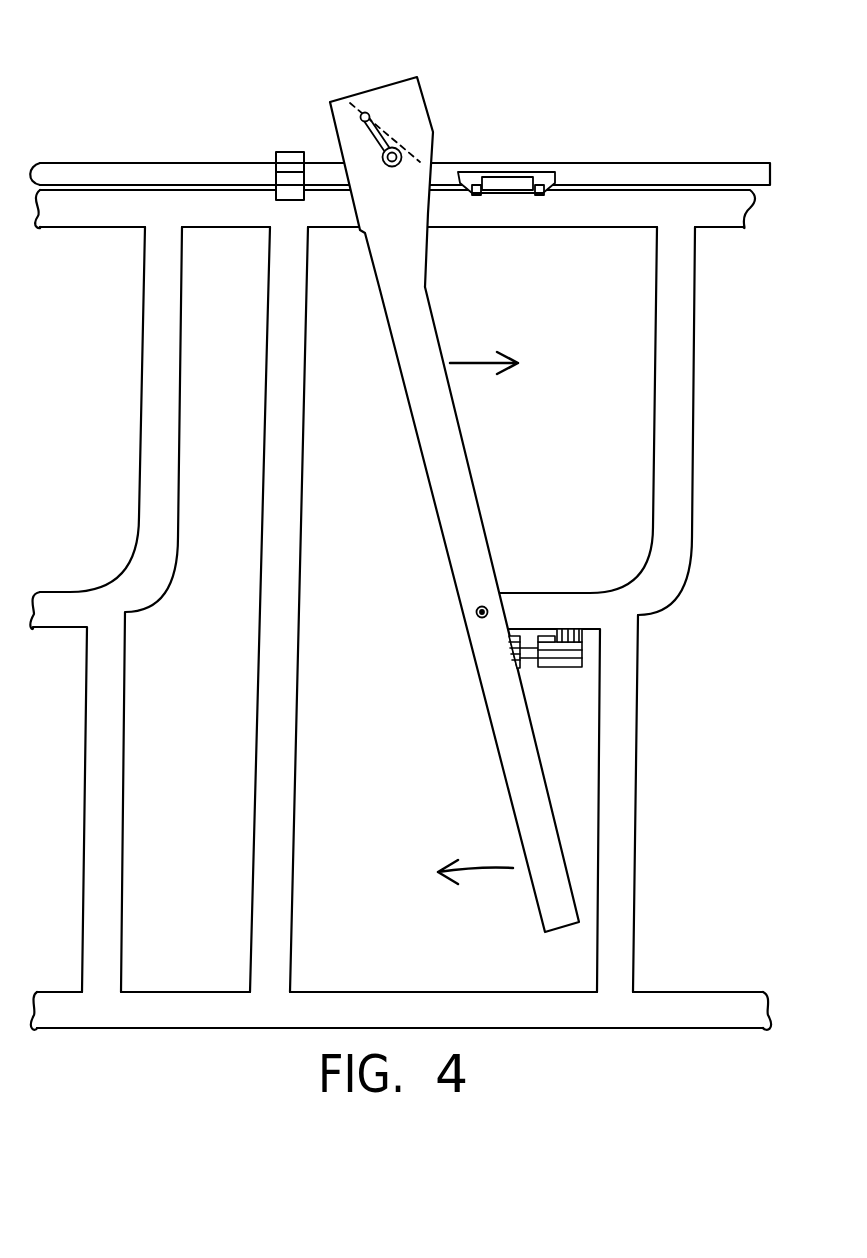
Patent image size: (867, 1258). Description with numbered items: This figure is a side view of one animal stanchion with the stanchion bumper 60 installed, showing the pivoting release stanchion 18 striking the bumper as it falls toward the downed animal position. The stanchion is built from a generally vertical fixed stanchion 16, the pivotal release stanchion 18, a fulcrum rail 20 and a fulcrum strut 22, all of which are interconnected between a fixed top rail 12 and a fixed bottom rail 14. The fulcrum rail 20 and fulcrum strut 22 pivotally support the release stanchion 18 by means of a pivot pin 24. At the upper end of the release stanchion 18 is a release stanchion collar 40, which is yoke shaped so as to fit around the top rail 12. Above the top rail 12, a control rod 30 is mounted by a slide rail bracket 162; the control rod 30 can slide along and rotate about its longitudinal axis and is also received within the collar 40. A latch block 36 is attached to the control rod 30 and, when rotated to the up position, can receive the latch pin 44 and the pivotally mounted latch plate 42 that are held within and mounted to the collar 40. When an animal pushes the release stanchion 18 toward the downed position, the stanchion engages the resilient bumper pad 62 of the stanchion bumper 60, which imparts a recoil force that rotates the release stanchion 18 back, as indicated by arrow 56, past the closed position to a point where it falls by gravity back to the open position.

The fixed top rail 12 is at (477, 220).
The fixed bottom rail 14 is at (442, 992).
The fixed stanchion 16 is at (302, 575).
The pivotal release stanchion 18 is at (498, 761).
The fulcrum rail 20 is at (693, 480).
The fulcrum strut 22 is at (637, 772).
The pivot pin 24 is at (476, 612).
The control rod 30 is at (237, 163).
The latch block 36 is at (467, 172).
The release stanchion collar 40 is at (337, 100).
The latch plate 42 is at (365, 111).
The latch pin 44 is at (384, 114).
The rotation direction arrow 56 is at (483, 619).
The stanchion bumper 60 is at (552, 668).
The resilient bumper pad 62 is at (512, 630).
The slide rail bracket 162 is at (295, 152).